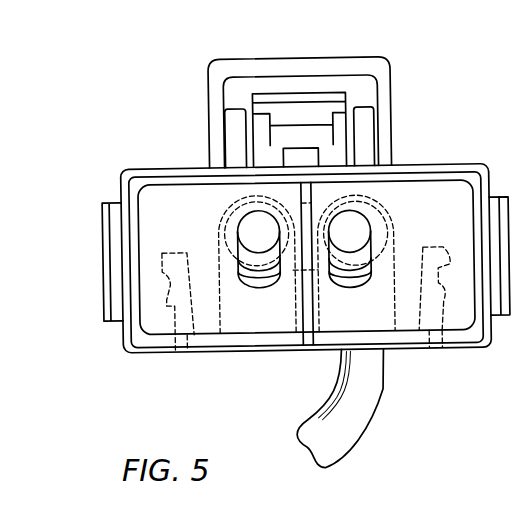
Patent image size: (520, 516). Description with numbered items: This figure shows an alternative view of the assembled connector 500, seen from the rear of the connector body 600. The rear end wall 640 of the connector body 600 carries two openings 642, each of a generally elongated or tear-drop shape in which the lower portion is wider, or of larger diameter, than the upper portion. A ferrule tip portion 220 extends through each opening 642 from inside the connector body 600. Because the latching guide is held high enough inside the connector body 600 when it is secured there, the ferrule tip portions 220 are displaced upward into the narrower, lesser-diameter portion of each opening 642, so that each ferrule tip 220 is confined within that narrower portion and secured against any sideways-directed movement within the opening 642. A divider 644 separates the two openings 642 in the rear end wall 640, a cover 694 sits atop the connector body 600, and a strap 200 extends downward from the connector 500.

The electrical connector assembly 500 is at (66, 351).
The connector housing 600 is at (138, 170).
The housing latch member 640 is at (77, 2).
The terminal receiving cavity 642 is at (258, 286).
The central divider rib 644 is at (305, 350).
The latch cover 694 is at (265, 66).
The terminal contact 220 is at (352, 230).
The cable strap 200 is at (350, 432).